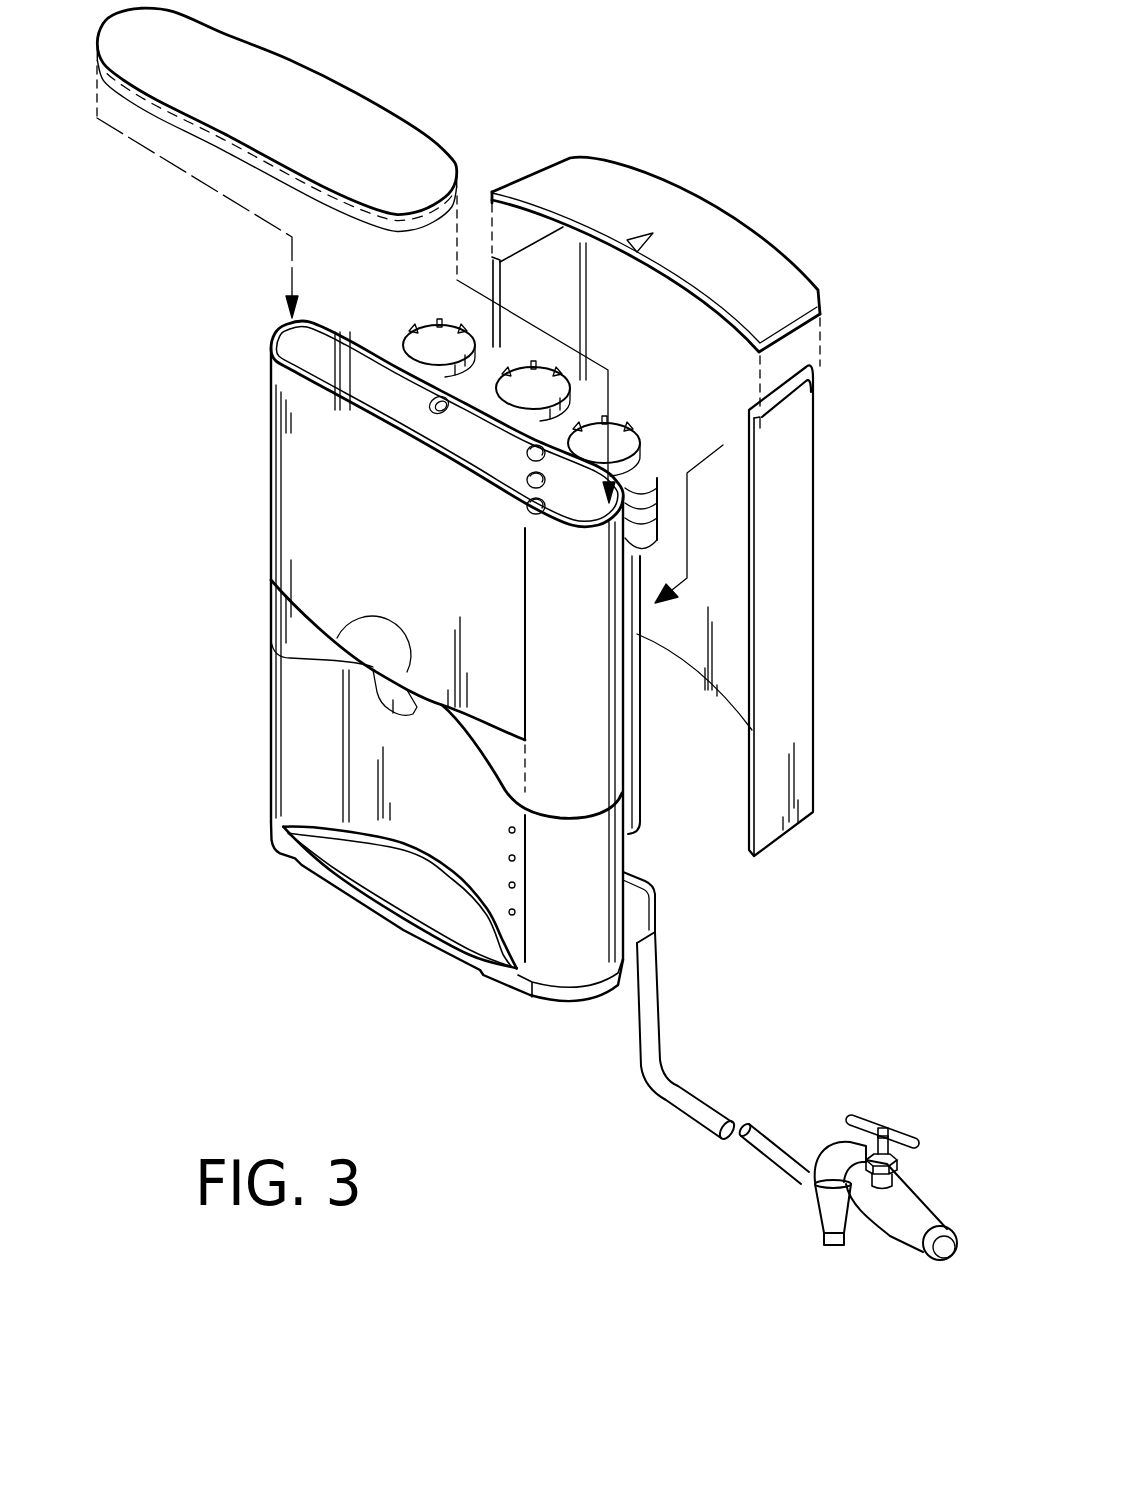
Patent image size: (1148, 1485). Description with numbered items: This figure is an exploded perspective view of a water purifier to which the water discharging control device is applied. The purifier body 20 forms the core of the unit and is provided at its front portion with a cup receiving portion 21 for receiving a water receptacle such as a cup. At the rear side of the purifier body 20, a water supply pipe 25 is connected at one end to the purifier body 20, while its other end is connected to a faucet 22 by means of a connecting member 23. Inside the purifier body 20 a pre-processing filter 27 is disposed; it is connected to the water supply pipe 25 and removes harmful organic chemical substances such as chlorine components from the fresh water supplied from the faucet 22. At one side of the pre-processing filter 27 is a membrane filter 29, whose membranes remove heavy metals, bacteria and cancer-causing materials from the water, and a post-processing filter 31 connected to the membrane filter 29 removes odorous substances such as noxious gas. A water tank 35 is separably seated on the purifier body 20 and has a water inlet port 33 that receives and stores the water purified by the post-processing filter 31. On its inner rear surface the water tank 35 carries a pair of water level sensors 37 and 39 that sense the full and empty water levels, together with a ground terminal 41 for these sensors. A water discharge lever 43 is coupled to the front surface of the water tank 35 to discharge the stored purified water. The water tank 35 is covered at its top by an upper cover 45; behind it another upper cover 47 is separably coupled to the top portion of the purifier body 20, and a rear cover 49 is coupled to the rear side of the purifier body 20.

The purifier body 20 is at (569, 1021).
The cup receiving portion 21 is at (328, 851).
The faucet 22 is at (894, 1218).
The connecting member 23 is at (822, 1226).
The water supply pipe 25 is at (674, 1087).
The pre-processing filter 27 is at (633, 804).
The membrane filter 29 is at (533, 389).
The post-processing filter 31 is at (433, 343).
The water inlet port 33 is at (429, 407).
The water tank 35 is at (330, 528).
The water level sensor 37 is at (526, 453).
The water level sensor 39 is at (546, 484).
The ground terminal 41 is at (528, 510).
The water discharge lever 43 is at (378, 693).
The upper cover 45 is at (368, 132).
The upper cover 47 is at (748, 258).
The rear cover 49 is at (790, 487).